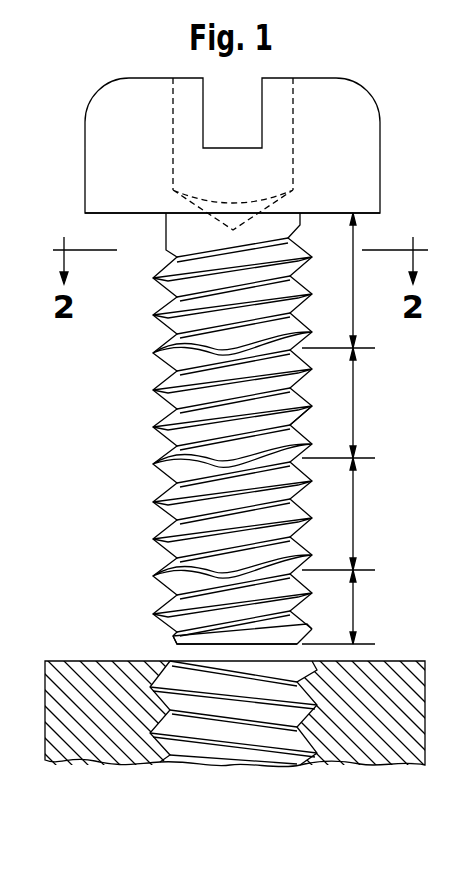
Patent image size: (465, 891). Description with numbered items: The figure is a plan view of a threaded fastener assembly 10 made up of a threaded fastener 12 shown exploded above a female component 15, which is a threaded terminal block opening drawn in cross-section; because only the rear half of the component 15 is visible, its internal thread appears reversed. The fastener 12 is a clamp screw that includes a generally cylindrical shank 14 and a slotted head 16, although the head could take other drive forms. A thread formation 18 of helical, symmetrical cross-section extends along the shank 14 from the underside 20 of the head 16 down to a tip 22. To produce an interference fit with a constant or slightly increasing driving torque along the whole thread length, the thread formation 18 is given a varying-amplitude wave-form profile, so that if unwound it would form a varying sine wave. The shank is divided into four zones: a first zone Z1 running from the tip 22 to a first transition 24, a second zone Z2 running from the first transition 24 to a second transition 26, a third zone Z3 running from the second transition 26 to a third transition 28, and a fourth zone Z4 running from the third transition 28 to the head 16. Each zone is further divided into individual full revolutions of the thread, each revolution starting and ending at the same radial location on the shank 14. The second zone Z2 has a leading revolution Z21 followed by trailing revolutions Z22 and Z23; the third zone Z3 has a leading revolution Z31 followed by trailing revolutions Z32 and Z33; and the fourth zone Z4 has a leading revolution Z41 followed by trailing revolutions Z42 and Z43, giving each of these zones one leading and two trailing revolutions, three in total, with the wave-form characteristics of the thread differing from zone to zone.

The threaded fastener assembly 10 is at (92, 377).
The threaded fastener 12 is at (143, 249).
The cylindrical shank 14 is at (221, 446).
The female component 15 is at (90, 645).
The head 16 is at (335, 92).
The thread formation 18 is at (316, 408).
The underside of the head 20 is at (364, 214).
The tip 22 is at (197, 645).
The first transition 24 is at (351, 570).
The second transition 26 is at (351, 458).
The third transition 28 is at (351, 348).
The first zone Z1 is at (366, 607).
The second zone Z2 is at (366, 514).
The third zone Z3 is at (366, 403).
The fourth zone Z4 is at (366, 280).
The leading revolution of the thread Z21 is at (151, 576).
The trailing revolution of the thread Z22 is at (151, 539).
The trailing revolution of the thread Z23 is at (151, 502).
The leading revolution of the thread Z31 is at (151, 464).
The trailing revolution of the thread Z32 is at (151, 428).
The trailing revolution of the thread Z33 is at (151, 390).
The leading revolution of the thread Z41 is at (151, 352).
The trailing revolution of the thread Z42 is at (151, 314).
The trailing revolution of the thread Z43 is at (151, 278).